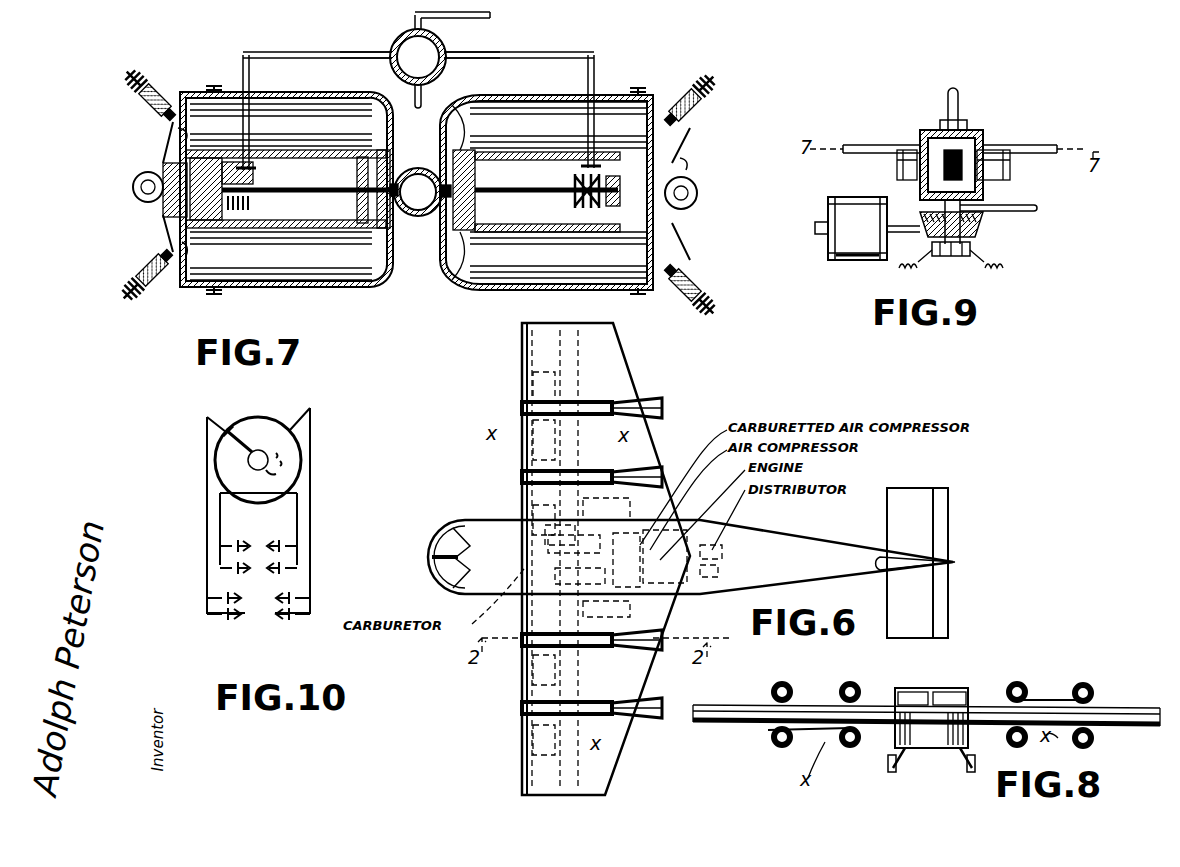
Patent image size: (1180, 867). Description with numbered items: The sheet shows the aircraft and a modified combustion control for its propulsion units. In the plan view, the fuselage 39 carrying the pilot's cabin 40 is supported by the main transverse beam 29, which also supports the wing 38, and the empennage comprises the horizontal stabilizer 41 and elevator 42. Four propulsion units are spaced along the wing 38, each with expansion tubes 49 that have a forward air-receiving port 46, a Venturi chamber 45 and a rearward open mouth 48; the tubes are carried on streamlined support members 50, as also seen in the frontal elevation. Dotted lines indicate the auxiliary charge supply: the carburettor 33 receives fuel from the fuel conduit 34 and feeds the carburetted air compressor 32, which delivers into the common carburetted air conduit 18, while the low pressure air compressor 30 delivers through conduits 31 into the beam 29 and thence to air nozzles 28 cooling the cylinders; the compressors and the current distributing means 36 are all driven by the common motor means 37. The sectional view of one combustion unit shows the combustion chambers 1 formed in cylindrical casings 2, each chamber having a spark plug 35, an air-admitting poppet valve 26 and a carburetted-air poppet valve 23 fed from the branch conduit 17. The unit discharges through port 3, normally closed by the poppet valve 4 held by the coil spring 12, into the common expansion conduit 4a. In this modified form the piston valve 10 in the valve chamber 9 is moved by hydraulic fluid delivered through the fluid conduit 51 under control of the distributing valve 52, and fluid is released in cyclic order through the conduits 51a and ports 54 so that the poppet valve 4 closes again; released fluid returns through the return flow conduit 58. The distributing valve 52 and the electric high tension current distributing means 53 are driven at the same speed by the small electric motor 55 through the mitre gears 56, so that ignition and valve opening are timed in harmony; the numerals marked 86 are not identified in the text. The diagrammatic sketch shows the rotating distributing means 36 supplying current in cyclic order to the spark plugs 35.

In FIG. 7, the combustion chamber 1 is at (310, 92).
In FIG. 7, the cylindrical casing 2 is at (532, 97).
In FIG. 7, the port 3 is at (418, 191).
In FIG. 7, the poppet valve 4 is at (320, 186).
In FIG. 7, the common expansion conduit 4a is at (412, 216).
In FIG. 7, the valve chamber 9 is at (252, 206).
In FIG. 7, the piston valve 10 is at (163, 195).
In FIG. 7, the coil spring 12 is at (255, 170).
In FIG. 7, the branch conduit 17 is at (133, 185).
In FIG. 7, the poppet valve 23 is at (450, 190).
In FIG. 7, the poppet valve 26 is at (150, 290).
In FIG. 7, the spark plug 86 is at (165, 80).
In FIG. 7, the spark plug 35 is at (640, 87).
In FIG. 10, the spark plug 35 is at (266, 540).
In FIG. 7, the fluid conduit 51 is at (285, 52).
In FIG. 9, the fluid conduit 51 is at (862, 146).
In FIG. 9, the conduit 51a is at (1040, 166).
In FIG. 7, the distributing valve 52 is at (440, 68).
In FIG. 9, the distributing valve 52 is at (968, 128).
In FIG. 9, the electric high tension current distributing means 53 is at (951, 258).
In FIG. 9, the port 54 is at (985, 182).
In FIG. 9, the electric motor 55 is at (828, 252).
In FIG. 9, the mitre gears 56 is at (920, 214).
In FIG. 9, the return flow conduit 58 is at (1038, 210).
In FIG. 6, the common carburetted air conduit 18 is at (528, 380).
In FIG. 6, the air nozzle 28 is at (552, 368).
In FIG. 6, the main transverse beam 29 is at (578, 350).
In FIG. 6, the air compressor 30 is at (688, 582).
In FIG. 6, the conduit 31 is at (630, 505).
In FIG. 6, the carburetted air compressor 32 is at (596, 580).
In FIG. 6, the carburettor 33 is at (574, 543).
In FIG. 6, the fuel conduit 34 is at (566, 525).
In FIG. 6, the current distributing means 36 is at (722, 550).
In FIG. 10, the current distributing means 36 is at (250, 418).
In FIG. 6, the motor means 37 is at (718, 570).
In FIG. 6, the wing 38 is at (650, 446).
In FIG. 8, the wing 38 is at (980, 706).
In FIG. 6, the fuselage 39 is at (468, 520).
In FIG. 6, the pilot's cabin 40 is at (448, 578).
In FIG. 8, the pilot's cabin 40 is at (922, 700).
In FIG. 6, the horizontal stabilizer 41 is at (900, 495).
In FIG. 6, the elevator 42 is at (945, 522).
In FIG. 6, the Venturi chamber 45 is at (877, 563).
In FIG. 6, the air-receiving port 46 is at (522, 408).
In FIG. 8, the air-receiving port 46 is at (794, 686).
In FIG. 6, the open mouth 48 is at (662, 406).
In FIG. 8, the expansion tube 49 is at (772, 690).
In FIG. 8, the support member 50 is at (768, 730).